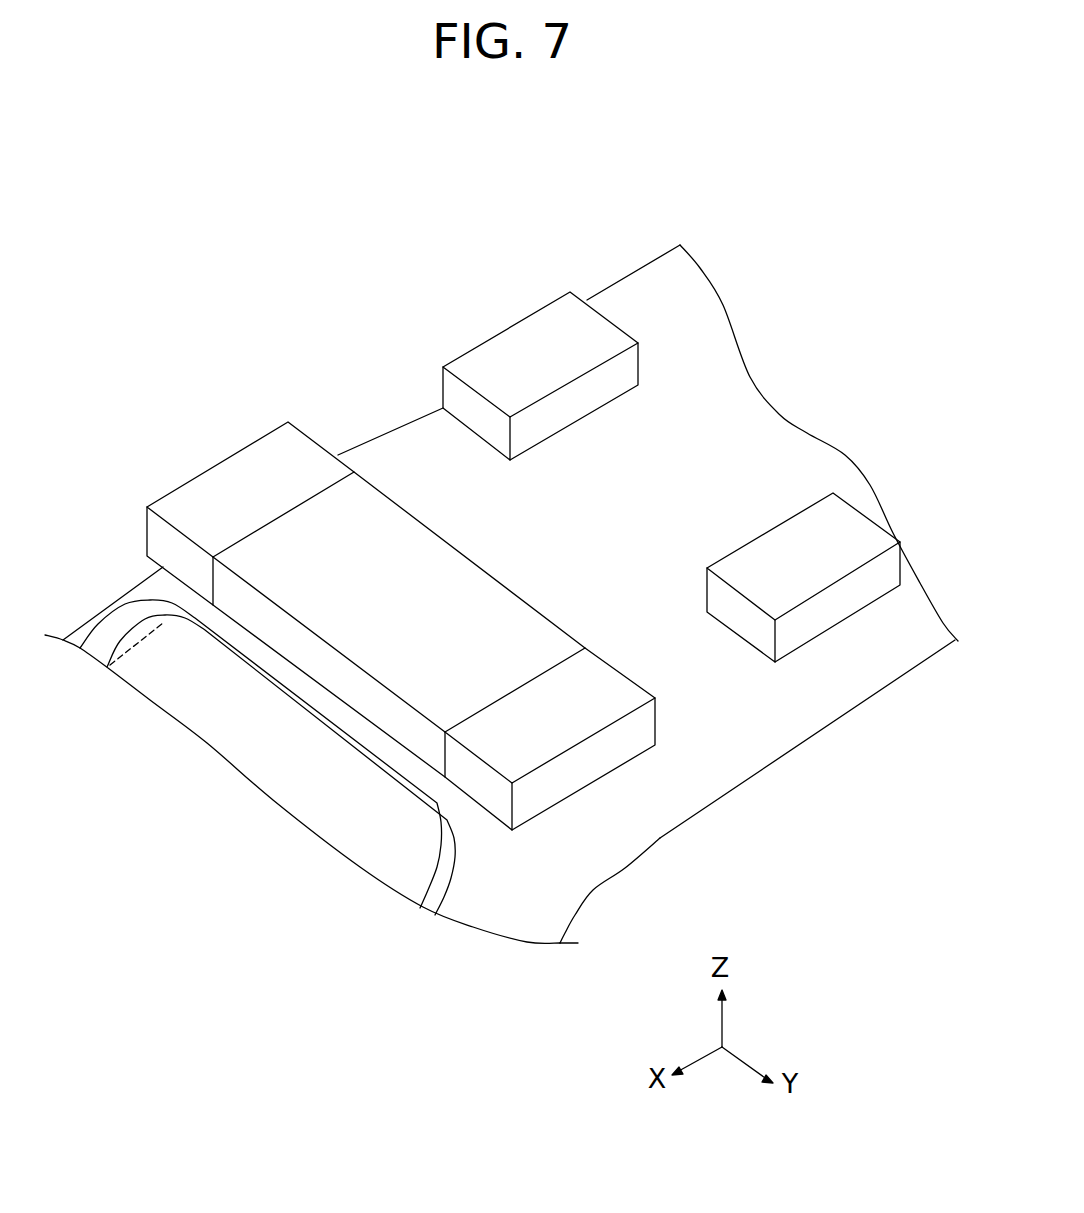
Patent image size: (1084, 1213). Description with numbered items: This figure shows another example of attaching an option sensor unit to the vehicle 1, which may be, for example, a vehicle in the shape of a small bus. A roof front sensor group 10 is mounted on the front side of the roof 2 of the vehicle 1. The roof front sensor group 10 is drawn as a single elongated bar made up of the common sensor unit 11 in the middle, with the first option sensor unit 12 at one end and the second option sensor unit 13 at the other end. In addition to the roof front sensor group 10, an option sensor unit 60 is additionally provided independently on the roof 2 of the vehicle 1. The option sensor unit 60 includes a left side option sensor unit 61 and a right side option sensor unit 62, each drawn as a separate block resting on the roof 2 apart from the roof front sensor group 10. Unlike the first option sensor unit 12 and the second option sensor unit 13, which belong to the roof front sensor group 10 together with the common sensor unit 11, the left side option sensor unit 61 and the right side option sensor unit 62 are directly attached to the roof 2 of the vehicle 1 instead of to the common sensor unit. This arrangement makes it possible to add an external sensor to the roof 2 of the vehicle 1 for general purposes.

The vehicle 1 is at (662, 206).
The roof 2 is at (640, 312).
The roof front sensor group 10 is at (274, 345).
The common sensor unit 11 is at (377, 508).
The first option sensor unit 12 is at (513, 717).
The second option sensor unit 13 is at (295, 443).
The option sensor unit 60 is at (812, 262).
The left side option sensor unit 61 is at (812, 522).
The right side option sensor unit 62 is at (612, 373).